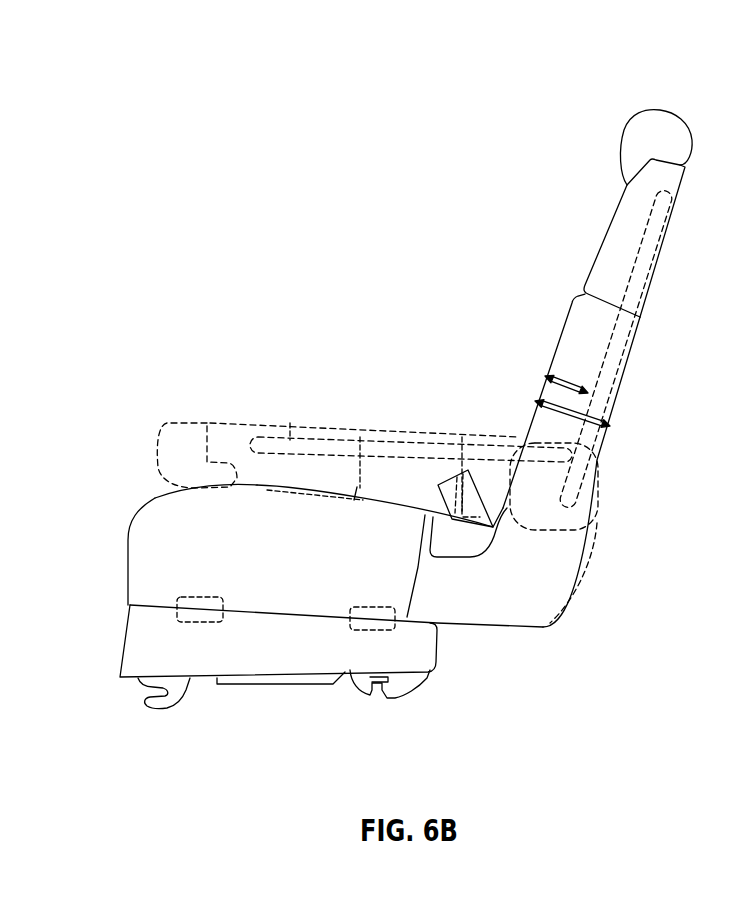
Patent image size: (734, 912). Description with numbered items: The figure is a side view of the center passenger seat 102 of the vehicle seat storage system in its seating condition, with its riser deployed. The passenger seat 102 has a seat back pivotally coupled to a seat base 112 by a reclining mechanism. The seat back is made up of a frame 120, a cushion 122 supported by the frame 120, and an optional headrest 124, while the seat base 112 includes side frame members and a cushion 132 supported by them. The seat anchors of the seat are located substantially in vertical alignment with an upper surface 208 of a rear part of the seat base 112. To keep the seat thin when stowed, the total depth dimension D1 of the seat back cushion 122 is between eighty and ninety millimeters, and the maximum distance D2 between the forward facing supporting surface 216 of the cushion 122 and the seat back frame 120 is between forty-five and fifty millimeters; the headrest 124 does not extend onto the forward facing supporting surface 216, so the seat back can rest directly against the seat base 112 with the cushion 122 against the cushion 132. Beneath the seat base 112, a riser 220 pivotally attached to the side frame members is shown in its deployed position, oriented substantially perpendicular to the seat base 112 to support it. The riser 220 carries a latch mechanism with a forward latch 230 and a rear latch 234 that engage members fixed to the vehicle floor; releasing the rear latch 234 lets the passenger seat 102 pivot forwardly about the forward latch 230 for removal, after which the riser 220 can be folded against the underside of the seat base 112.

The passenger seat 102 is at (357, 291).
The seat base 112 is at (142, 572).
The frame 120 is at (652, 282).
The cushion 122 is at (597, 234).
The headrest 124 is at (653, 108).
The cushion 132 is at (150, 527).
The upper surface 208 is at (600, 521).
The forward facing supporting surface 216 is at (557, 335).
The riser 220 is at (263, 665).
The forward latch 230 is at (157, 708).
The rear latch 234 is at (397, 698).
The total depth dimension D1 is at (545, 405).
The maximum distance D2 is at (582, 392).